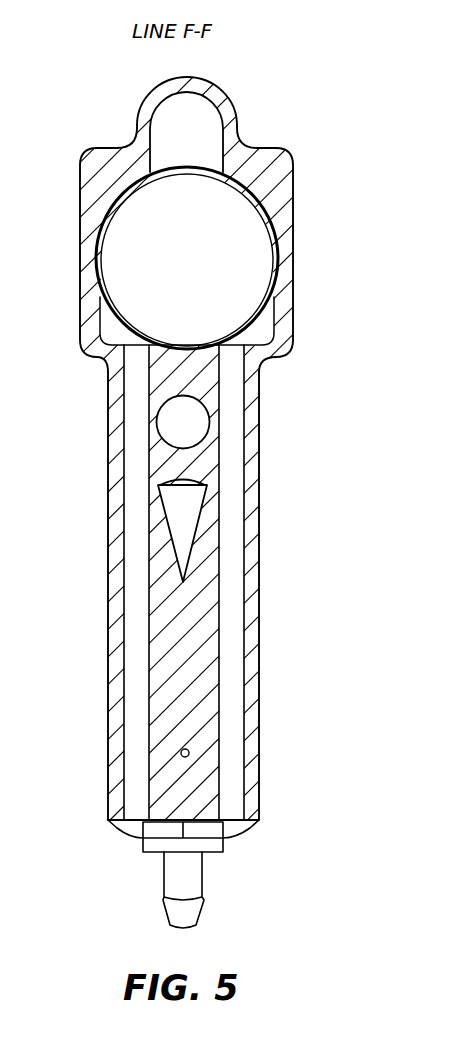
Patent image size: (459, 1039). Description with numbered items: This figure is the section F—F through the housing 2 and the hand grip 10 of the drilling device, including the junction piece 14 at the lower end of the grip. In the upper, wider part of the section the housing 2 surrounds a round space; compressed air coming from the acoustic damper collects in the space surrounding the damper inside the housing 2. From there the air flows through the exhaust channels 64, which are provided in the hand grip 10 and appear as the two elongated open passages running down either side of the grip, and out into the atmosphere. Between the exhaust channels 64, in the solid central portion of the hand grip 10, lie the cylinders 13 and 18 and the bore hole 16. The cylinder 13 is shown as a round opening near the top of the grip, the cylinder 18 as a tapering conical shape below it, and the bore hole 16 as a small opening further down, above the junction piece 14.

The housing 2 is at (264, 159).
The hand grip 10 is at (253, 560).
The exhaust channels 64 is at (259, 334).
The cylinder 13 is at (193, 421).
The cylinder 18 is at (190, 503).
The bore hole 16 is at (190, 753).
The junction piece 14 is at (192, 877).